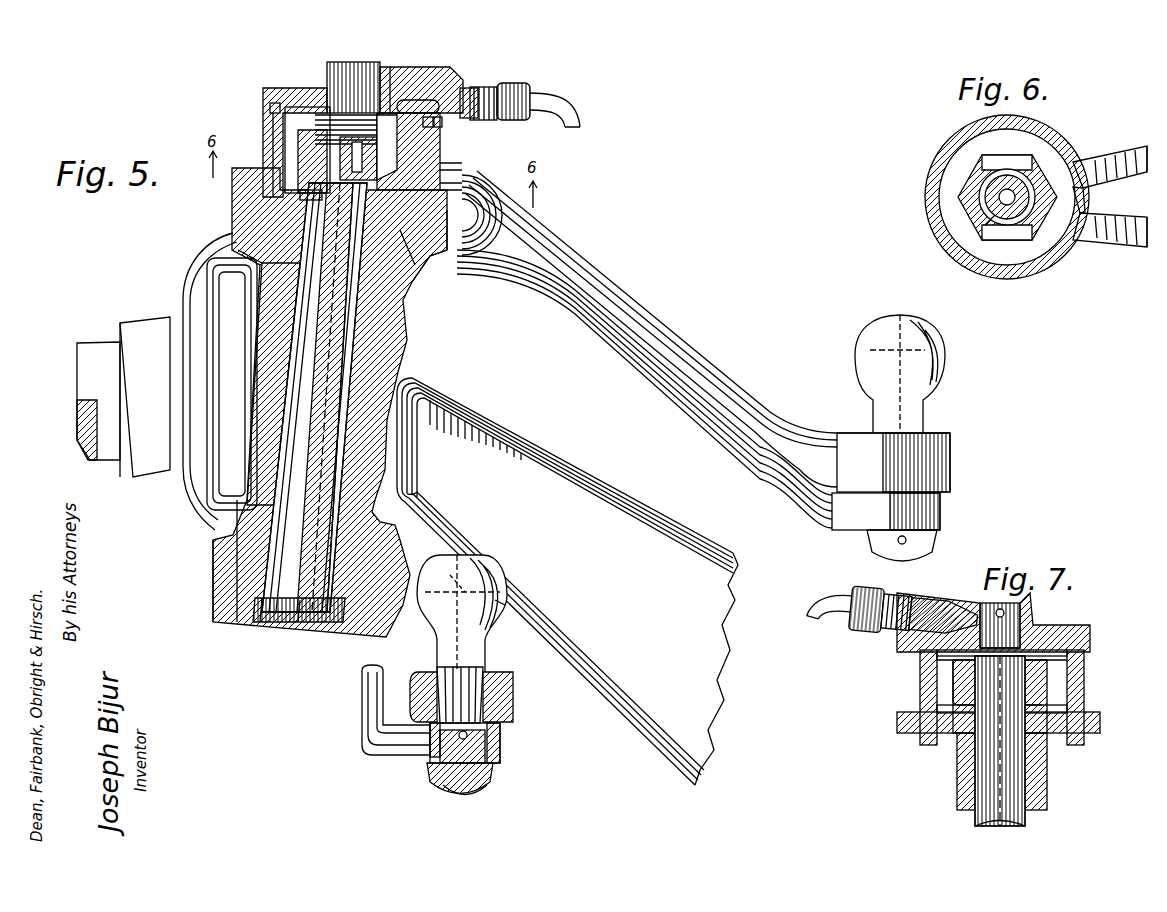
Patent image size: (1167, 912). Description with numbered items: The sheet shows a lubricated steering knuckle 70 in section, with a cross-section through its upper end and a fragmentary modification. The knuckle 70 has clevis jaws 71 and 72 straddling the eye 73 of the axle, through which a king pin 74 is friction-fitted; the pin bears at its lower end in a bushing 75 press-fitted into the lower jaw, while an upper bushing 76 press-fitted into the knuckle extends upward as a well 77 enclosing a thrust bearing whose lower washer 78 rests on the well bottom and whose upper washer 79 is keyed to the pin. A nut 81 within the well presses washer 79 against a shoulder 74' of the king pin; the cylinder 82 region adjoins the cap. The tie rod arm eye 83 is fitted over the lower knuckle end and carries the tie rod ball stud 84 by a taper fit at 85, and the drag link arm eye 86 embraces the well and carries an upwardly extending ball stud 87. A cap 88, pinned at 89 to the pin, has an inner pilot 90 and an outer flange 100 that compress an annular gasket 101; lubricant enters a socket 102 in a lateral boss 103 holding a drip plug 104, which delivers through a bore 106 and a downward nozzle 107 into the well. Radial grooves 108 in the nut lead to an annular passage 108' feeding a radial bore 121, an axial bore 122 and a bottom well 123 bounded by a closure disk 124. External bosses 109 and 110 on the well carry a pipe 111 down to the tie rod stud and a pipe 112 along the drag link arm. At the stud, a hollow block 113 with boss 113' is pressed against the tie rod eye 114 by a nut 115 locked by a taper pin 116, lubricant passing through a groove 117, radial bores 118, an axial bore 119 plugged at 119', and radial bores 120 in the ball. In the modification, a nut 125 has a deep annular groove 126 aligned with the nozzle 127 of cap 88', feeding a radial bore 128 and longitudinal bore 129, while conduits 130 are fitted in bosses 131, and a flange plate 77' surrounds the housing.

In FIG. 5, the knuckle 70 is at (196, 278).
In FIG. 5, the clevis jaw 71 is at (245, 622).
In FIG. 5, the clevis jaw 72 is at (420, 270).
In FIG. 5, the eye of axle 73 is at (277, 333).
In FIG. 5, the king pin 74 is at (375, 397).
In FIG. 5, the shoulder 74' is at (413, 277).
In FIG. 5, the bushing 75 is at (265, 622).
In FIG. 5, the bushing 76 is at (245, 232).
In FIG. 5, the well 77 is at (330, 395).
In FIG. 7, the flange plate 77' is at (1020, 704).
In FIG. 5, the lower washer 78 is at (425, 250).
In FIG. 5, the upper washer 79 is at (440, 150).
In FIG. 5, the nut 81 is at (388, 160).
In FIG. 6, the nut 81 is at (985, 168).
In FIG. 5, the cylinder 82 is at (398, 90).
In FIG. 5, the eye of tie rod arm 83 is at (222, 575).
In FIG. 5, the tie rod ball stud 84 is at (483, 665).
In FIG. 5, the taper fit 85 is at (513, 705).
In FIG. 5, the eye of drag link arm 86 is at (480, 238).
In FIG. 5, the ball stud 87 is at (912, 418).
In FIG. 5, the cap 88 is at (351, 130).
In FIG. 7, the cap 88' is at (993, 615).
In FIG. 5, the pin 89 is at (333, 80).
In FIG. 5, the inner pilot 90 is at (268, 120).
In FIG. 5, the outer flange 100 is at (432, 127).
In FIG. 5, the annular gasket 101 is at (442, 122).
In FIG. 5, the socket 102 is at (515, 85).
In FIG. 5, the lateral boss 103 is at (485, 87).
In FIG. 5, the drip plug 104 is at (500, 120).
In FIG. 5, the bore 106 is at (465, 88).
In FIG. 5, the nozzle 107 is at (420, 100).
In FIG. 5, the radial grooves 108 is at (261, 195).
In FIG. 6, the radial grooves 108 is at (956, 243).
In FIG. 5, the annular passage 108' is at (236, 113).
In FIG. 6, the annular passage 108' is at (962, 197).
In FIG. 6, the external boss 109 is at (1085, 240).
In FIG. 6, the external boss 110 is at (1090, 163).
In FIG. 5, the pipe 111 is at (490, 240).
In FIG. 6, the pipe 111 is at (1135, 232).
In FIG. 5, the pipe 112 is at (540, 238).
In FIG. 6, the pipe 112 is at (1140, 157).
In FIG. 5, the hollow metal block 113 is at (518, 760).
In FIG. 5, the boss 113' is at (410, 762).
In FIG. 5, the tie rod eye 114 is at (420, 675).
In FIG. 5, the nut 115 is at (440, 778).
In FIG. 5, the taper pin 116 is at (480, 792).
In FIG. 5, the groove 117 is at (400, 747).
In FIG. 5, the radial bores 118 is at (500, 740).
In FIG. 5, the axial bore 119 is at (538, 598).
In FIG. 5, the plug 119' is at (485, 554).
In FIG. 5, the radial bores 120 is at (500, 575).
In FIG. 5, the radial bore 121 is at (232, 235).
In FIG. 6, the radial bore 121 is at (990, 222).
In FIG. 5, the axial bore 122 is at (332, 150).
In FIG. 5, the well 123 is at (300, 622).
In FIG. 5, the closure disk 124 is at (322, 622).
In FIG. 7, the nut 125 is at (1047, 680).
In FIG. 7, the annular groove 126 is at (1035, 648).
In FIG. 7, the nozzle 127 is at (960, 665).
In FIG. 7, the radial bore 128 is at (955, 675).
In FIG. 7, the longitudinal bore 129 is at (990, 765).
In FIG. 7, the conduits 130 is at (960, 765).
In FIG. 7, the bosses 131 is at (1067, 708).